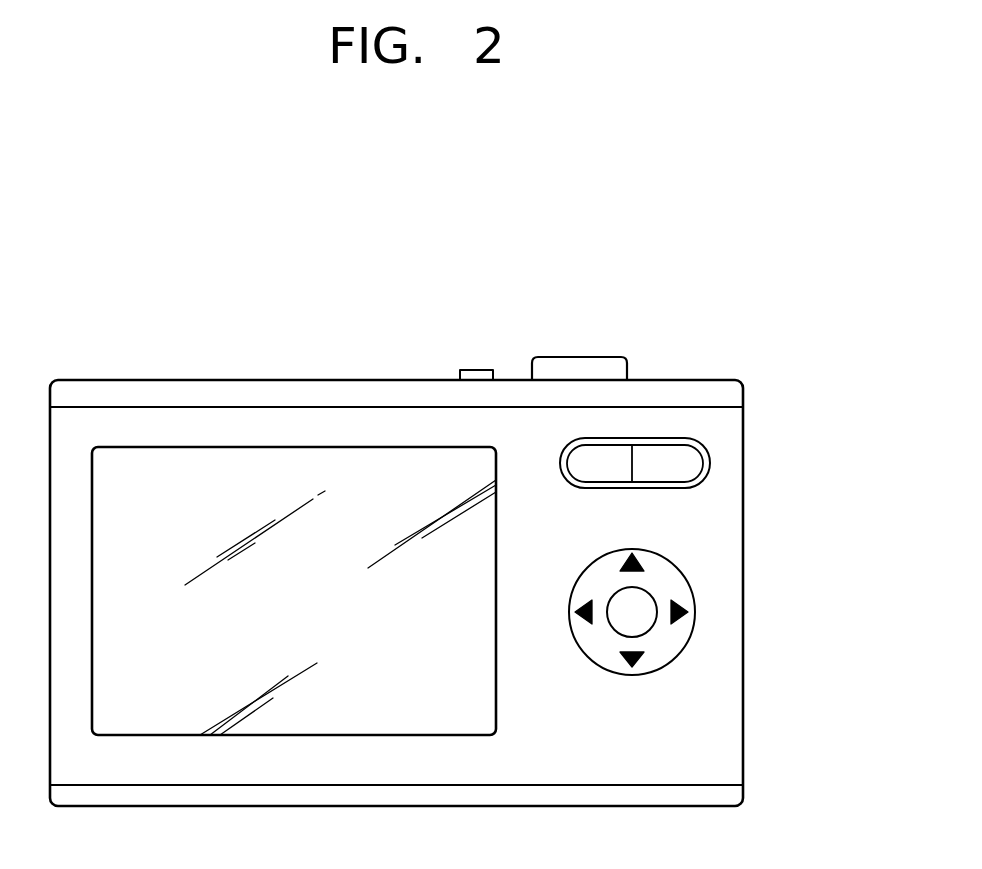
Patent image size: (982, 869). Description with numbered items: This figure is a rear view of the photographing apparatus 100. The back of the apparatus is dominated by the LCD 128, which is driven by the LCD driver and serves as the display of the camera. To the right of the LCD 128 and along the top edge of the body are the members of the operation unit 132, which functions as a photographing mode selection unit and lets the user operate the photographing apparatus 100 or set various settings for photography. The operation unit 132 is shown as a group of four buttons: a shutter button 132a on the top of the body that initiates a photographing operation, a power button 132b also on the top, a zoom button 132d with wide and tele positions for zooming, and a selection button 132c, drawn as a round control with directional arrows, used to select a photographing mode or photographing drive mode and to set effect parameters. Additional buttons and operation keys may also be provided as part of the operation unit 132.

The photographing apparatus 100 is at (457, 520).
The LCD 128 is at (203, 447).
The operation unit 132 is at (473, 272).
The shutter button 132a is at (575, 365).
The power button 132b is at (480, 370).
The selection button 132c is at (678, 575).
The zoom button 132d is at (625, 448).